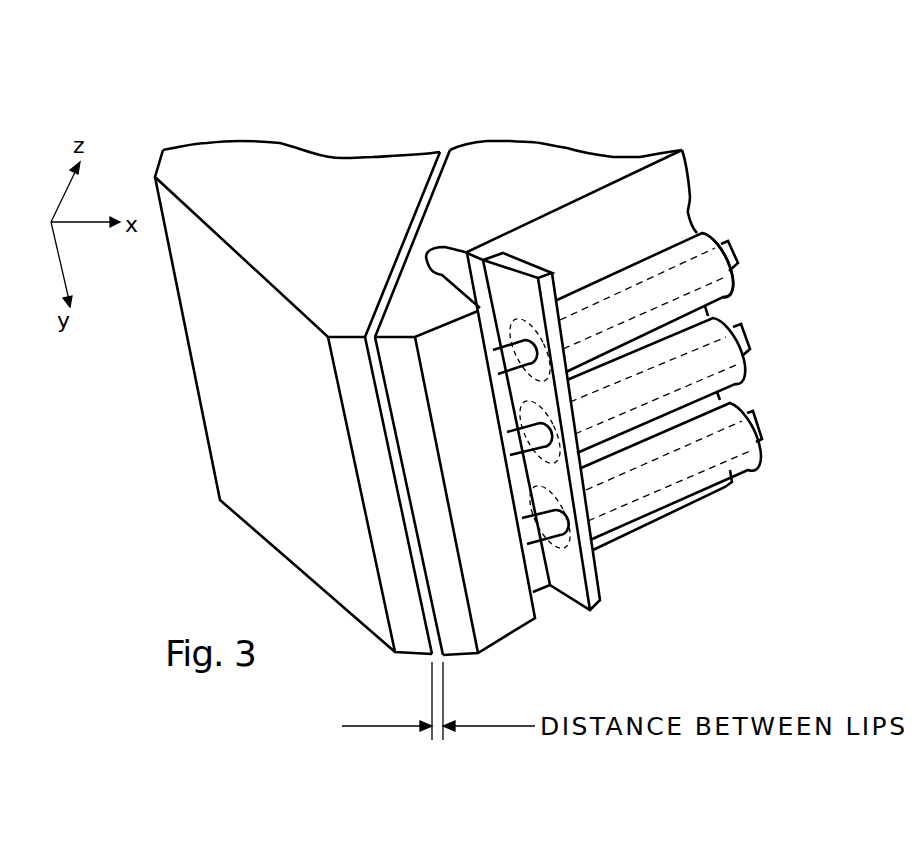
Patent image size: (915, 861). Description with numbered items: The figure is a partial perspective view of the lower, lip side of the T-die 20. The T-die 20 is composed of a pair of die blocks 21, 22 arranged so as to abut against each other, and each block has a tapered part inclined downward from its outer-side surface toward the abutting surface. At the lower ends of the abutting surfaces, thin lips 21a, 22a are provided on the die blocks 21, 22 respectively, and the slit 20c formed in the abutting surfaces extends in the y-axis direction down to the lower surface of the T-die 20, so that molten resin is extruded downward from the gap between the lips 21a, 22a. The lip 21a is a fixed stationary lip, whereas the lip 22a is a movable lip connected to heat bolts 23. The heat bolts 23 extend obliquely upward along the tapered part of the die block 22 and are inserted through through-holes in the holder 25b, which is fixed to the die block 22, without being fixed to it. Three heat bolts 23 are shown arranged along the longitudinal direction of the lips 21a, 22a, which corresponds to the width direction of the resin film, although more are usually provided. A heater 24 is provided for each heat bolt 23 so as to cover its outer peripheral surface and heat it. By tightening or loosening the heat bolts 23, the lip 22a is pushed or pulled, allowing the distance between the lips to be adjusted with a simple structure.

The T-die 20 is at (733, 138).
The die block 21 is at (335, 167).
The die block 22 is at (522, 148).
The slit 20c is at (447, 134).
The lip 21a is at (412, 647).
The lip 22a is at (455, 652).
The holder 25b is at (488, 250).
The heat bolt 23 is at (735, 255).
The heater 24 is at (725, 292).